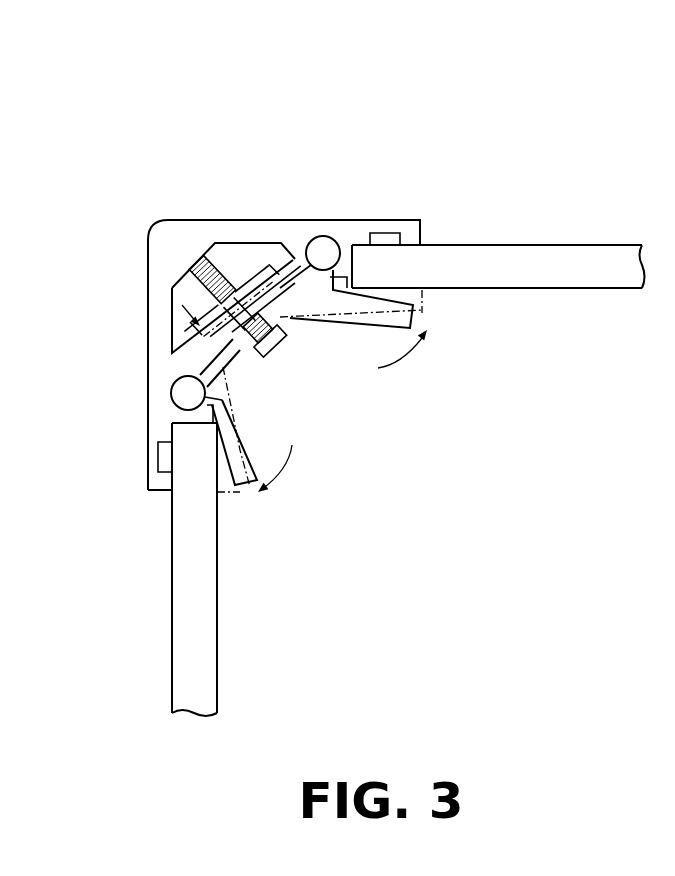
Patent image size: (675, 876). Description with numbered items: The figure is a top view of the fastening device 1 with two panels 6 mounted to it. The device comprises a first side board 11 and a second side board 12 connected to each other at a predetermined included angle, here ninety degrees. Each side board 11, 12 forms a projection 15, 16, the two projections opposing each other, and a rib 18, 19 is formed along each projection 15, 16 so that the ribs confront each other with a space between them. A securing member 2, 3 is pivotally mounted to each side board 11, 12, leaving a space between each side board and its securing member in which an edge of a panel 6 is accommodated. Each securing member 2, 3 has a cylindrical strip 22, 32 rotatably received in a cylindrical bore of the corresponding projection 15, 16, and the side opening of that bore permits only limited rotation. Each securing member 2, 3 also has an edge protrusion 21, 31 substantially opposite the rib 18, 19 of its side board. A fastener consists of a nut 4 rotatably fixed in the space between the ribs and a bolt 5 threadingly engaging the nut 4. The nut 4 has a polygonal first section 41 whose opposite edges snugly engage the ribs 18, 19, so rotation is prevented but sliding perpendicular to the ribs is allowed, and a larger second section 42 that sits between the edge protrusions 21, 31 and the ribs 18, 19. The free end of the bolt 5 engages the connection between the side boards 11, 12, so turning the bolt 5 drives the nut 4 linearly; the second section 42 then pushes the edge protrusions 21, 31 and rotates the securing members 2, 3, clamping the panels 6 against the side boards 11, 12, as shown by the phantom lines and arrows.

The fastening device 1 is at (167, 220).
The first side board 11 is at (152, 442).
The second side board 12 is at (383, 233).
The projection 15 is at (163, 402).
The projection 16 is at (349, 247).
The rib 18 is at (182, 344).
The rib 19 is at (296, 248).
The securing member 2 is at (162, 446).
The edge protrusion 21 is at (240, 360).
The cylindrical strip 22 is at (186, 392).
The securing member 3 is at (325, 276).
The edge protrusion 31 is at (292, 330).
The cylindrical strip 32 is at (324, 237).
The nut 4 is at (263, 186).
The first section 41 is at (233, 245).
The second section 42 is at (262, 258).
The bolt 5 is at (258, 348).
The panel 6 is at (557, 273).